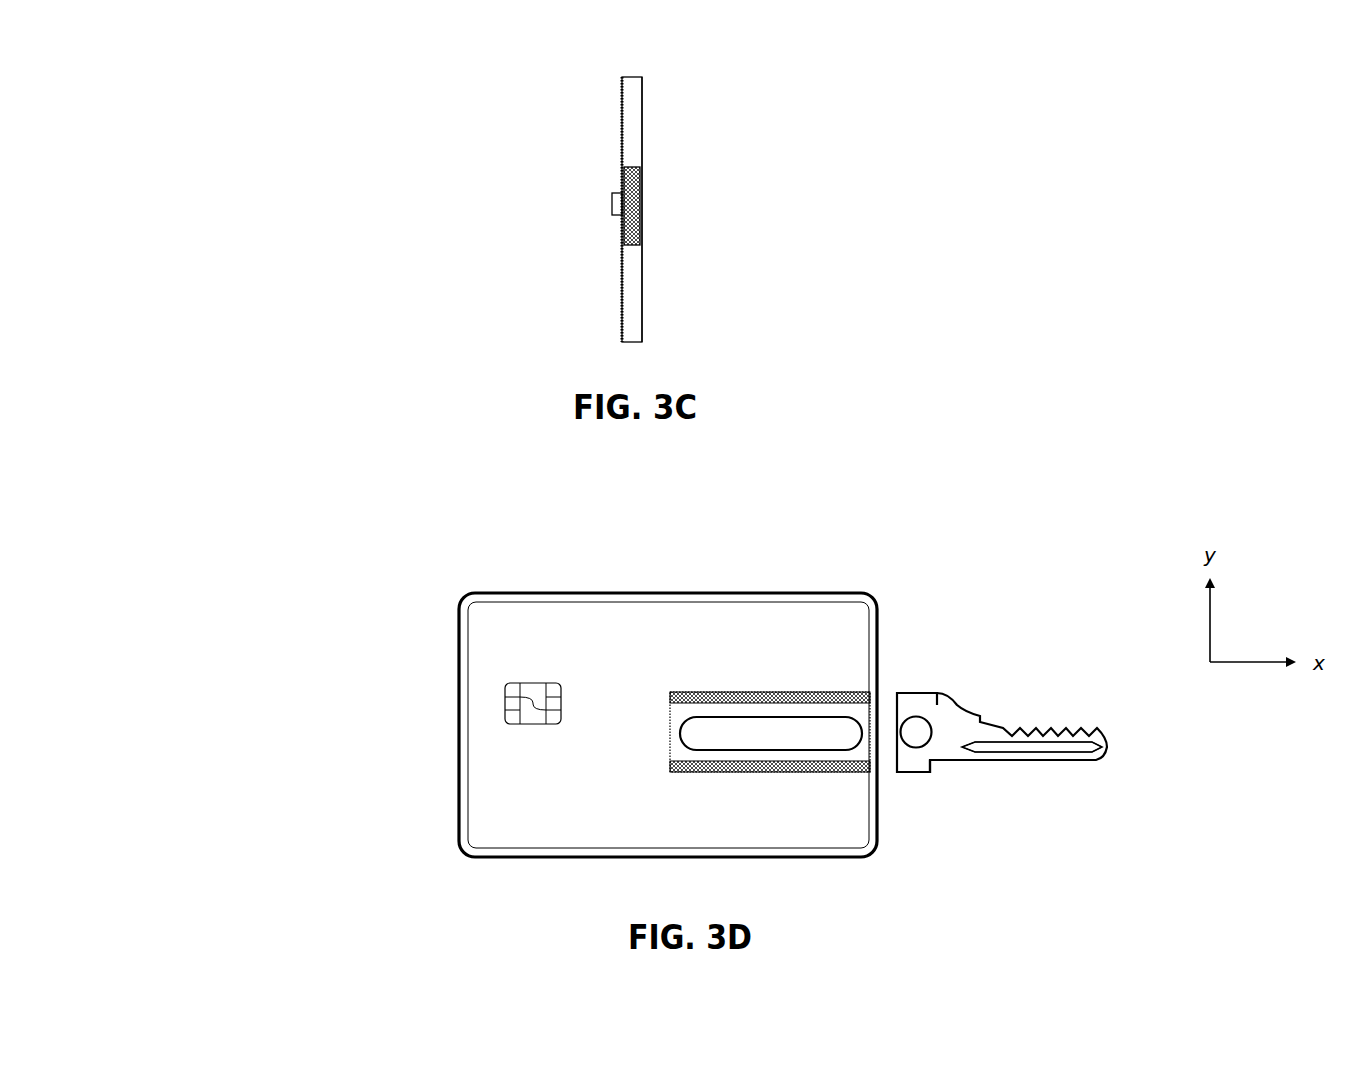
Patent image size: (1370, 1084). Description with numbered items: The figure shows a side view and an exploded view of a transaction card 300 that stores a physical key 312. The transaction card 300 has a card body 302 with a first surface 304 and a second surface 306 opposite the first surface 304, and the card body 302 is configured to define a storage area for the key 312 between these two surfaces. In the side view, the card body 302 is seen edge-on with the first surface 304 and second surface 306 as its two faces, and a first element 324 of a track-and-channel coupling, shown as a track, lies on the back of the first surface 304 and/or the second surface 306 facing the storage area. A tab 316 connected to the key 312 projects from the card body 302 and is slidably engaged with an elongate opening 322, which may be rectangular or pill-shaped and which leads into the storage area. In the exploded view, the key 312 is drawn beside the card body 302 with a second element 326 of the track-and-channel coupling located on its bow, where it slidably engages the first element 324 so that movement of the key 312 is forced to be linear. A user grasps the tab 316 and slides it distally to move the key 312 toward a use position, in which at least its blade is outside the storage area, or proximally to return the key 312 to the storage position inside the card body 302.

In FIG. 3C, the transaction card 300 is at (508, 54).
In FIG. 3D, the transaction card 300 is at (355, 484).
In FIG. 3C, the card body 302 is at (630, 93).
In FIG. 3D, the card body 302 is at (428, 628).
In FIG. 3C, the first surface 304 is at (622, 284).
In FIG. 3D, the first surface 304 is at (556, 829).
In FIG. 3C, the second surface 306 is at (642, 284).
In FIG. 3D, the physical key 312 is at (1097, 748).
In FIG. 3C, the tab 316 is at (612, 203).
In FIG. 3D, the tab 316 is at (928, 730).
In FIG. 3D, the elongate opening 322 is at (758, 731).
In FIG. 3C, the first element of track-and-channel coupling 324 is at (626, 173).
In FIG. 3D, the first element of track-and-channel coupling 324 is at (696, 697).
In FIG. 3D, the second element of track-and-channel coupling 326 is at (930, 694).